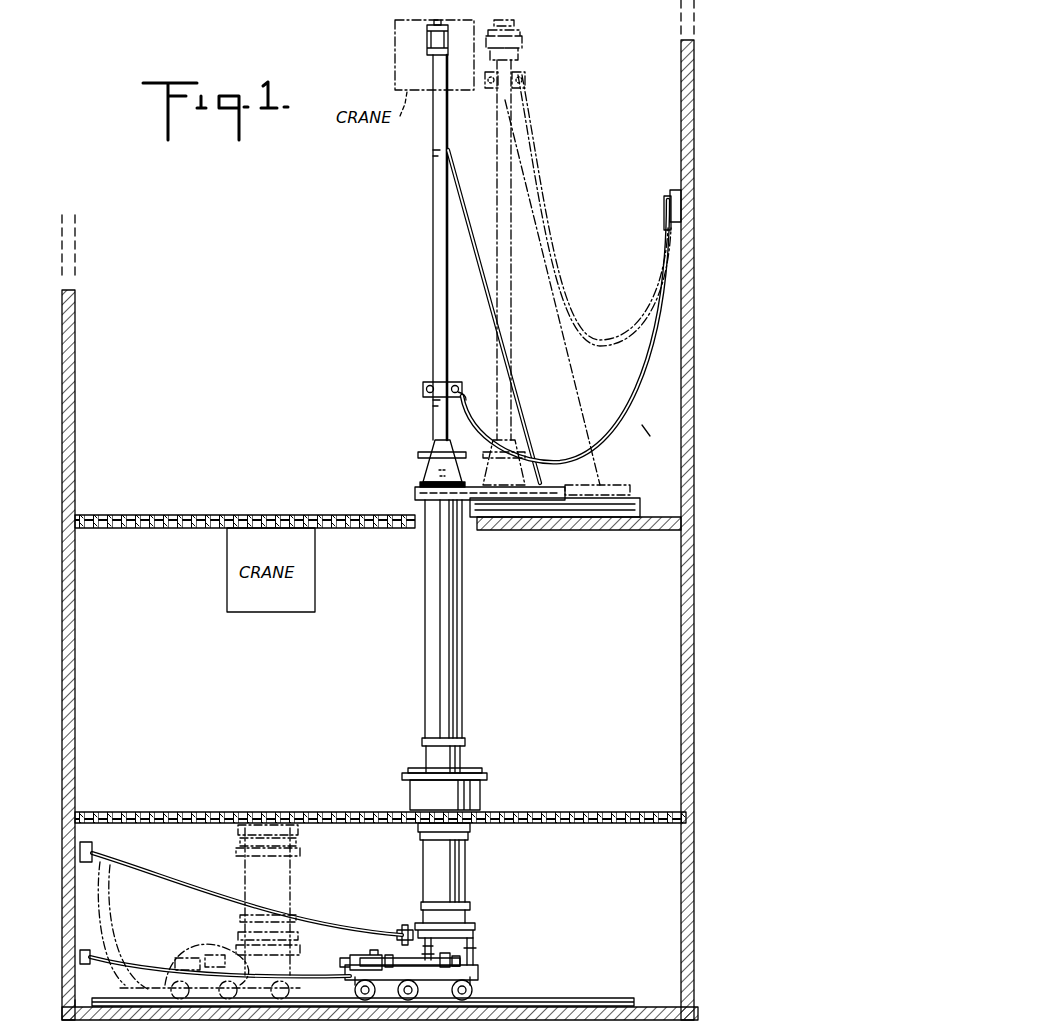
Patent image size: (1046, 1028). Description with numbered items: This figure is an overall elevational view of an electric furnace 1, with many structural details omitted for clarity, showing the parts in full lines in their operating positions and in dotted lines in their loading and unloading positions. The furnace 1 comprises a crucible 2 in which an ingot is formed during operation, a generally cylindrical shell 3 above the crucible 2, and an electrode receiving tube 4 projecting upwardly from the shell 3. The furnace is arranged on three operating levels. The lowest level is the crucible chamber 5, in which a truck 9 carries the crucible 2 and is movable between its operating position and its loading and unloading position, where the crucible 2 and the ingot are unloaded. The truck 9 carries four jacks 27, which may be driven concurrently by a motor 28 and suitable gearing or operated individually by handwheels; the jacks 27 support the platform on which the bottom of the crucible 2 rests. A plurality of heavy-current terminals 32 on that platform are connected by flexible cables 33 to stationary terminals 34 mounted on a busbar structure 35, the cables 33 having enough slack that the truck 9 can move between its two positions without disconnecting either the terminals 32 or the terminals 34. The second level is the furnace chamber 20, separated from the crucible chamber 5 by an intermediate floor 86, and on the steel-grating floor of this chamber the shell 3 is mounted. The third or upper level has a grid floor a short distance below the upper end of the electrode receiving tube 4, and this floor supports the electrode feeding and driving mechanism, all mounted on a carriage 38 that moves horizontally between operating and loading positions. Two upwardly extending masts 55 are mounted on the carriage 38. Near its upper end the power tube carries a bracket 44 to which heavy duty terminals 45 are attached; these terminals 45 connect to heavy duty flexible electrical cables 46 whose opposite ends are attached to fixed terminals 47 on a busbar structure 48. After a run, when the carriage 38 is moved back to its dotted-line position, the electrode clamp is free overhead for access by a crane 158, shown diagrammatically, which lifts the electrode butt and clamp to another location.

The electric furnace 1 is at (386, 318).
The crucible 2 is at (478, 873).
The shell 3 is at (480, 791).
The electrode receiving tube 4 is at (458, 603).
The crucible chamber 5 is at (614, 887).
The truck 9 is at (508, 968).
The furnace chamber 20 is at (598, 667).
The jacks 27 is at (448, 952).
The motor 28 is at (358, 954).
The terminals 32 is at (405, 925).
The flexible cables 33 is at (205, 898).
The stationary terminals 34 is at (354, 515).
The busbar structure 35 is at (80, 852).
The carriage 38 is at (563, 485).
The bracket 44 is at (423, 390).
The heavy duty terminals 45 is at (465, 392).
The flexible electrical cables 46 is at (578, 455).
The fixed terminals 47 is at (665, 205).
The busbar structure 48 is at (676, 206).
The masts 55 is at (433, 282).
The intermediate floor 86 is at (295, 812).
The crane 158 is at (395, 57).